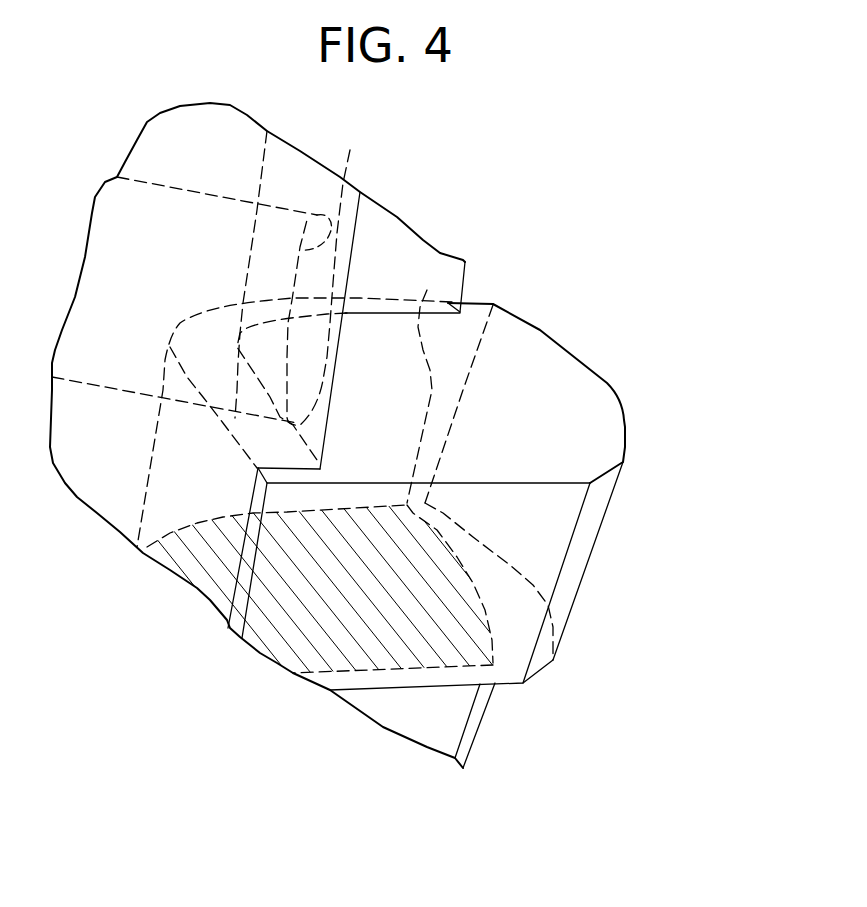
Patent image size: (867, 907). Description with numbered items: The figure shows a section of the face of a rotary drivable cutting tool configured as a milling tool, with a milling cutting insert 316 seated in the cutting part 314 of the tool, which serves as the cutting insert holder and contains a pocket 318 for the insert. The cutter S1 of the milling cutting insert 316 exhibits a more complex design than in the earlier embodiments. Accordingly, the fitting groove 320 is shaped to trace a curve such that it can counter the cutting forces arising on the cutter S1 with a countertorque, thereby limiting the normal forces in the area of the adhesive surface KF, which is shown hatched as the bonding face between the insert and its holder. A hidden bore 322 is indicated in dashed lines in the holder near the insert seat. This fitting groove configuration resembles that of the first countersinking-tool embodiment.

The hidden bore 322 is at (350, 150).
The insertion direction / end face 318 is at (377, 250).
The end face of body 314 is at (413, 255).
The hidden hole 320 is at (427, 290).
The second body portion 316 is at (563, 395).
The rounded side surface S1 is at (640, 427).
The contact surface (hatched) KF is at (447, 628).